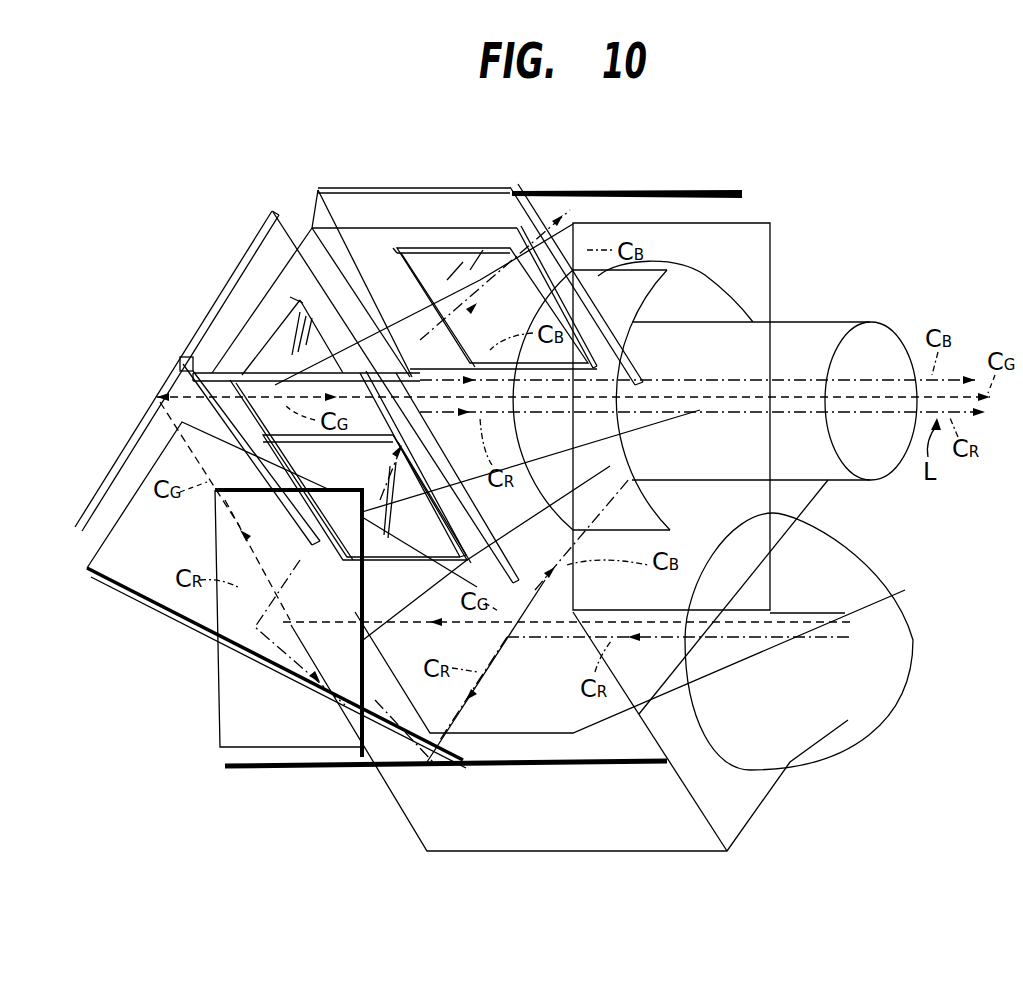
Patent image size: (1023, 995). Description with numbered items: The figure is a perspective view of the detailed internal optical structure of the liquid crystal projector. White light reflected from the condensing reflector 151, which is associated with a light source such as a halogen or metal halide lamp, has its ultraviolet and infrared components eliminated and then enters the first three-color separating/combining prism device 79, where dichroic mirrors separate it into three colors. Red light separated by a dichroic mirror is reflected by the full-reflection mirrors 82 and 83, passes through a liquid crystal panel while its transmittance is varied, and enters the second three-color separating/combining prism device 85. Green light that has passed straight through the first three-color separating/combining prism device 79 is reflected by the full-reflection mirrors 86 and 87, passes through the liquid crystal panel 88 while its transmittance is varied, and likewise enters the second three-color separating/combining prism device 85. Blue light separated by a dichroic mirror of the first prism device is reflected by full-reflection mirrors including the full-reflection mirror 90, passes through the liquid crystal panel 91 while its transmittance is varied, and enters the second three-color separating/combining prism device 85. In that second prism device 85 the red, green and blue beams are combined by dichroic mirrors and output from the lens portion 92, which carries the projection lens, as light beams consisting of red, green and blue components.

The first three-color separating/combining prism device 79 is at (450, 856).
The full-reflection mirror 82 is at (266, 770).
The full-reflection mirror 83 is at (217, 703).
The second three-color separating/combining prism device 85 is at (311, 216).
The full-reflection mirror 86 is at (148, 600).
The full-reflection mirror 87 is at (160, 377).
The liquid crystal panel 88 is at (265, 335).
The full-reflection mirror 90 is at (597, 220).
The liquid crystal panel 91 is at (435, 247).
The lens portion 92 is at (827, 312).
The condensing reflector 151 is at (850, 723).